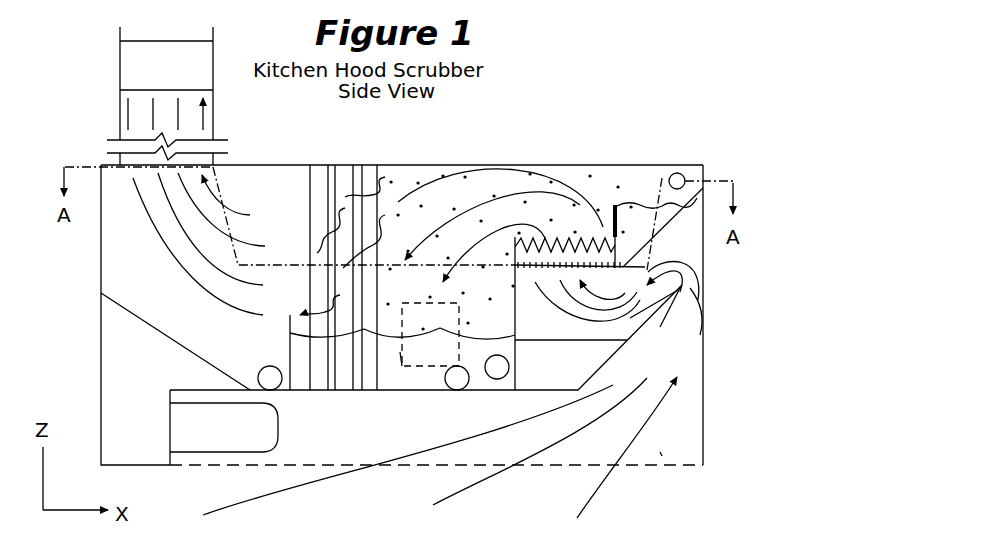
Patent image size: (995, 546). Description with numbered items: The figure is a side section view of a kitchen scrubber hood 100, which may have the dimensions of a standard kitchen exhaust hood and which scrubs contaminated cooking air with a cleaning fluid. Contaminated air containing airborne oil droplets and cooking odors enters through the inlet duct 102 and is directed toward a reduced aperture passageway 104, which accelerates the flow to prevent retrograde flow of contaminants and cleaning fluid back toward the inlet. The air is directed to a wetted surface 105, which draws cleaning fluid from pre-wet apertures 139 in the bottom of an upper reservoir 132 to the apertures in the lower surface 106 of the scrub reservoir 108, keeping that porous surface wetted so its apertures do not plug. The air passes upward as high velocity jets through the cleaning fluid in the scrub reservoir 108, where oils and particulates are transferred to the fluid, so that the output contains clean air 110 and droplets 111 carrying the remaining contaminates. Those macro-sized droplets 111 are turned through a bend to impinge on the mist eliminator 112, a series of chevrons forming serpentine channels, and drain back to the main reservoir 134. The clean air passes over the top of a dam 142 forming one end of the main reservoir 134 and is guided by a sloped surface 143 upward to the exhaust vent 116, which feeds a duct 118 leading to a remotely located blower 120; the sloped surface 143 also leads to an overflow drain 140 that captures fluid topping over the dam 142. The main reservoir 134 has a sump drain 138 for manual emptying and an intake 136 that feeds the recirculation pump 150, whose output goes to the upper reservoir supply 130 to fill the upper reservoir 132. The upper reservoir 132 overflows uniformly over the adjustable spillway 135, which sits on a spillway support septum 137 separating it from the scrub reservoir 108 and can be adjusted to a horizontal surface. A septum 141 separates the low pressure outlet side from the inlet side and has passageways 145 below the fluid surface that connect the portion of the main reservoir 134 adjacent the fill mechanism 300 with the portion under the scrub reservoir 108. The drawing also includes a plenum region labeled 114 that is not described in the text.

The kitchen scrubber hood 100 is at (632, 90).
The inlet duct 102 is at (662, 455).
The reduced aperture passageway 104 is at (703, 330).
The wetted surface 105 is at (703, 262).
The lower surface 106 is at (518, 273).
The scrub reservoir 108 is at (548, 247).
The clean air 110 is at (495, 191).
The droplets 111 is at (506, 184).
The mist eliminator 112 is at (318, 176).
The exhaust plenum 114 is at (237, 197).
The exhaust vent 116 is at (120, 156).
The duct 118 is at (120, 116).
The blower 120 is at (120, 66).
The upper reservoir supply 130 is at (681, 174).
The upper reservoir 132 is at (633, 207).
The main reservoir 134 is at (482, 342).
The adjustable spillway 135 is at (620, 207).
The intake 136 is at (499, 380).
The spillway support septum 137 is at (617, 240).
The sump drain 138 is at (449, 389).
The pre-wet apertures 139 is at (625, 268).
The overflow drain 140 is at (263, 368).
The septum 141 is at (513, 293).
The dam 142 is at (290, 346).
The sloped surface 143 is at (106, 300).
The passageways 145 is at (515, 390).
The recirculation pump 150 is at (190, 432).
The fill mechanism 300 is at (400, 352).